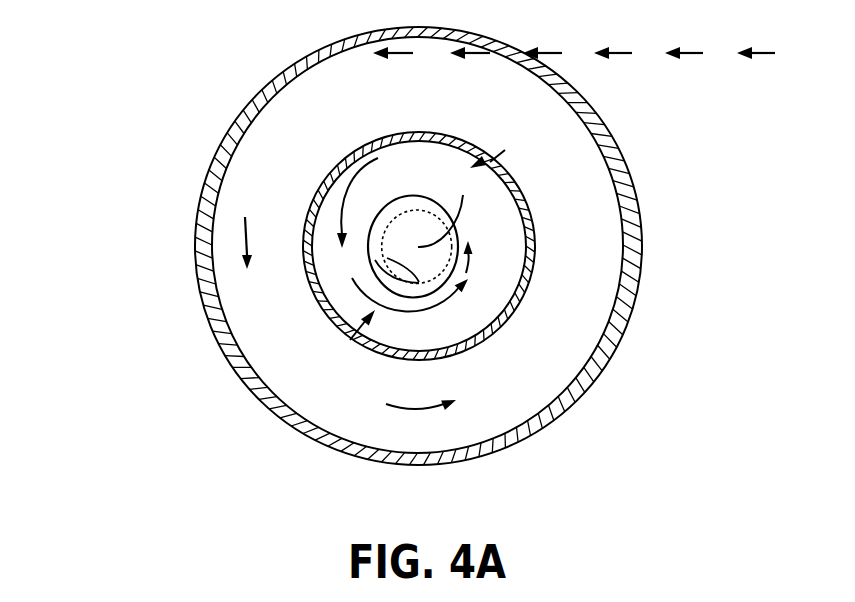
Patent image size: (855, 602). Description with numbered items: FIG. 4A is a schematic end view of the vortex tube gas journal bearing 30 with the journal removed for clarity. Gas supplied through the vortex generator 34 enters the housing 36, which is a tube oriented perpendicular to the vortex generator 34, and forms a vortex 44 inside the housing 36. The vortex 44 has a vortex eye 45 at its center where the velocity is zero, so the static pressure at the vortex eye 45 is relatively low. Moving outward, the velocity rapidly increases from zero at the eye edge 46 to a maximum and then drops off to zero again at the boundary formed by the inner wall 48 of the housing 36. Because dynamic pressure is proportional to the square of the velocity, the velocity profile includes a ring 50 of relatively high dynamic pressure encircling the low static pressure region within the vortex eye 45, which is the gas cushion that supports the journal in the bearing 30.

The vortex tube gas journal bearing 30 is at (210, 80).
The vortex generator 34 is at (642, 229).
The housing 36 is at (503, 330).
The vortex 44 is at (352, 338).
The vortex eye 45 is at (447, 207).
The eye edge 46 is at (386, 257).
The inner wall 48 is at (418, 350).
The ring 50 is at (418, 195).